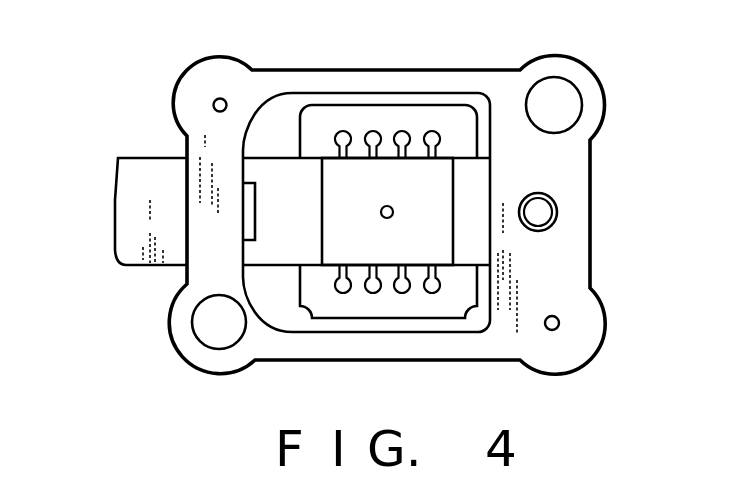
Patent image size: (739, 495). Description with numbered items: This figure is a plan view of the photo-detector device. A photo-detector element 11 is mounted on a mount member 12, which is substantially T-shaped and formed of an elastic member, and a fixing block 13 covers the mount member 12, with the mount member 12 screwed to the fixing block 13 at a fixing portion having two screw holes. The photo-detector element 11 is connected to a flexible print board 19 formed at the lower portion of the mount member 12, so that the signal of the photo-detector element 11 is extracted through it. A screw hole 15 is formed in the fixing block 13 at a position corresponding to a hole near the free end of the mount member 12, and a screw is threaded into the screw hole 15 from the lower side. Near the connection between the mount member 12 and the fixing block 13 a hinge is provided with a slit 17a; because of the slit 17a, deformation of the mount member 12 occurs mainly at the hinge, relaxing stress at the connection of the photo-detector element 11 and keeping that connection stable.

The photo-detector element 11 is at (334, 250).
The mount member 12 is at (273, 172).
The fixing block 13 is at (567, 167).
The screw hole 15 is at (558, 214).
The slit 17a is at (283, 205).
The flexible print board 19 is at (447, 123).